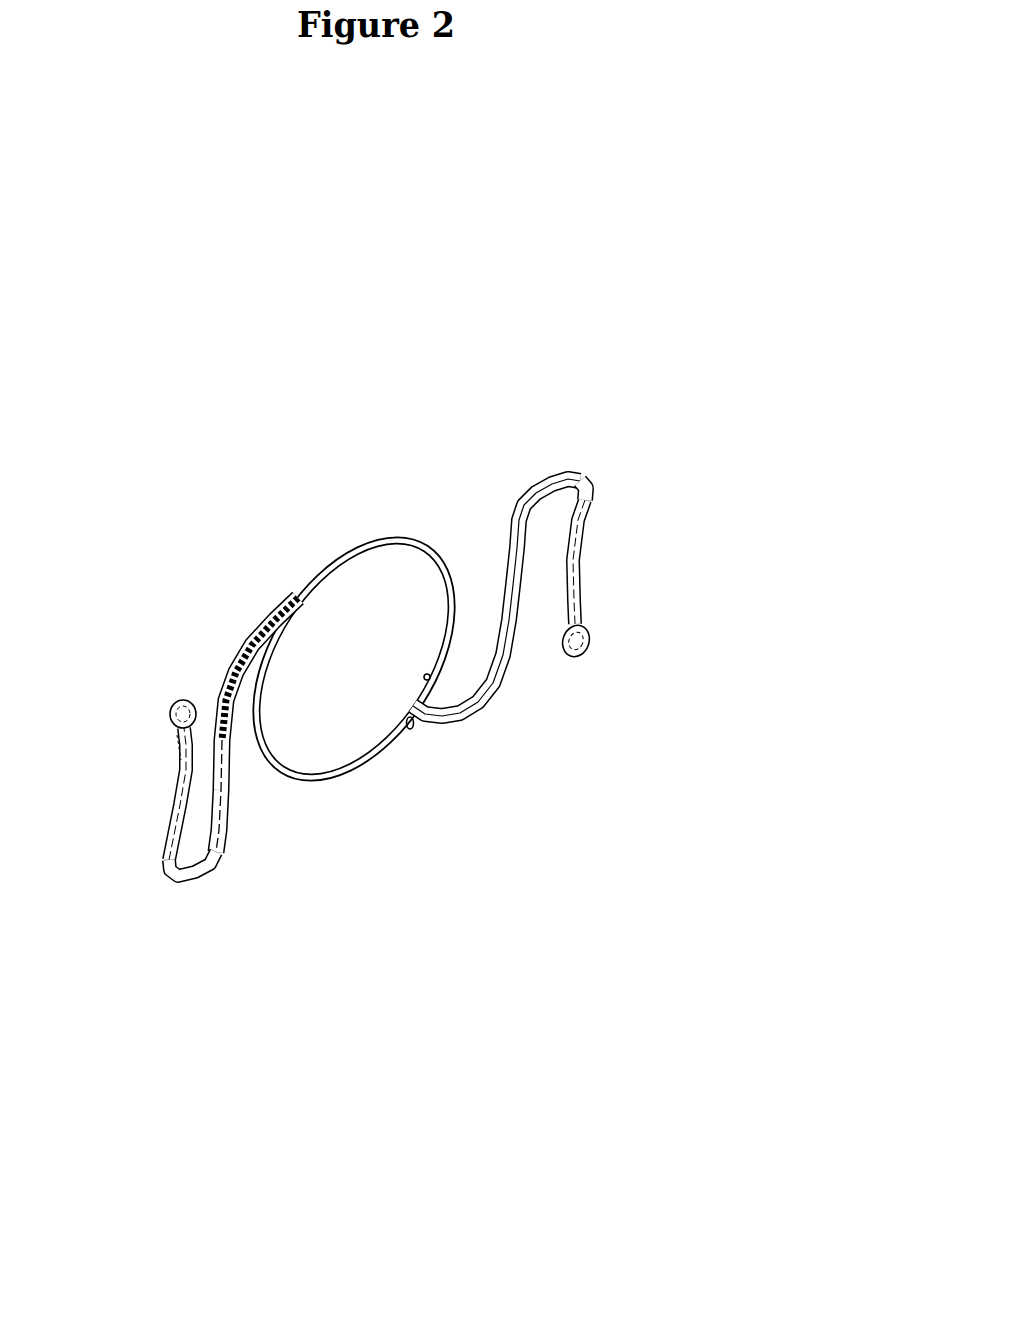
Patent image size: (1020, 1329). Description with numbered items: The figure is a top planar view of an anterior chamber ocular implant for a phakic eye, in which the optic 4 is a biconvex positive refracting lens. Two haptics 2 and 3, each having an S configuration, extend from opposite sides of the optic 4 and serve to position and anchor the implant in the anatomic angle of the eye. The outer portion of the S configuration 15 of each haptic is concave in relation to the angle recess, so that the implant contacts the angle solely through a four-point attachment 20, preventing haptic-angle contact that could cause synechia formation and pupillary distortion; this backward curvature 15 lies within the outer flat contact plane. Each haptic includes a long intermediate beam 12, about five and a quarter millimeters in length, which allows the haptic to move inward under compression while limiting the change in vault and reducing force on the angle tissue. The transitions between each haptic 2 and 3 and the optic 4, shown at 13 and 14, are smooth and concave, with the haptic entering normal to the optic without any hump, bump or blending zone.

The haptic 2 is at (436, 774).
The haptic 3 is at (153, 792).
The optic 4 is at (358, 618).
The intermediate beam 12 is at (238, 790).
The haptic-optic transition 13 is at (358, 830).
The haptic-optic transition 14 is at (430, 672).
The outer portion of the S configuration 15 is at (182, 768).
The four-point attachment 20 is at (157, 702).